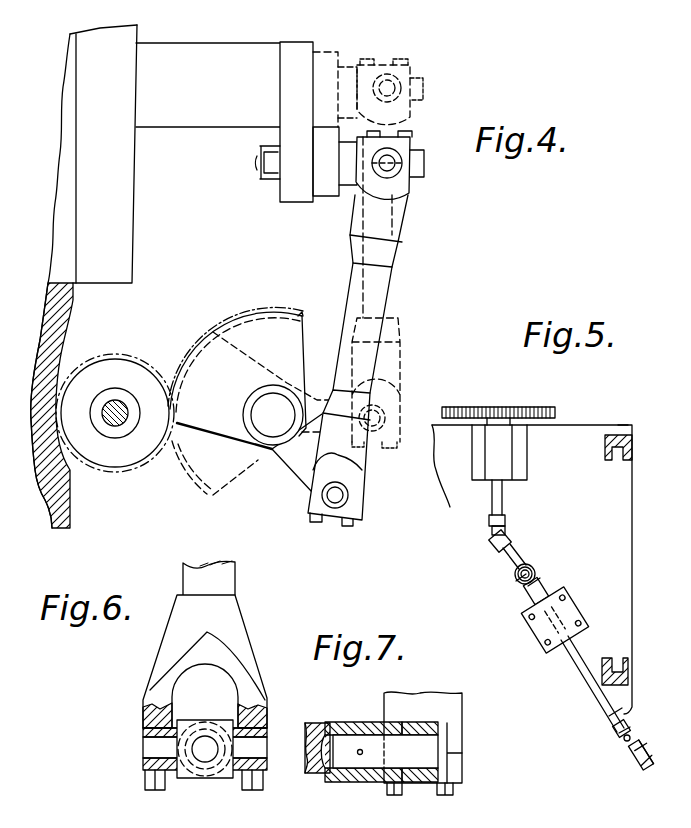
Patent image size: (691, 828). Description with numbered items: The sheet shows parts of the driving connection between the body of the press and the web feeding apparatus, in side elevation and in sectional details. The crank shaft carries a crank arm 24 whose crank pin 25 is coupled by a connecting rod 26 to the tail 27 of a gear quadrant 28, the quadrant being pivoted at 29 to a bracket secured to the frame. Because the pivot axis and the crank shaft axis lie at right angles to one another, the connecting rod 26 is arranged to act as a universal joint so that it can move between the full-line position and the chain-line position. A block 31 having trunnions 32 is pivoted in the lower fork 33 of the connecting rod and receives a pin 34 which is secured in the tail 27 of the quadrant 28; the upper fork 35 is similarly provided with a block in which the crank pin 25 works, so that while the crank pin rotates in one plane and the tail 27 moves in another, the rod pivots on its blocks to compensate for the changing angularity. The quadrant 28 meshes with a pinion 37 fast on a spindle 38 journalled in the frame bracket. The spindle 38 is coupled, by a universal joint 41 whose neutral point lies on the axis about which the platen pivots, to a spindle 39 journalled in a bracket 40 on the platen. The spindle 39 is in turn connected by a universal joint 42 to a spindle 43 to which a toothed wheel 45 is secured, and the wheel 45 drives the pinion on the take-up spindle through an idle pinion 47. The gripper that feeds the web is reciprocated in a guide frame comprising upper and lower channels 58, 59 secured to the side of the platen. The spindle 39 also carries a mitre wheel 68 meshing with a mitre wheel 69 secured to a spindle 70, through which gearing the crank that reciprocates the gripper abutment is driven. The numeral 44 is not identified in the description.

In FIG. 4, the crank arm 24 is at (283, 193).
In FIG. 4, the crank pin 25 is at (347, 180).
In FIG. 4, the connecting rod 26 is at (380, 303).
In FIG. 6, the connecting rod 26 is at (193, 567).
In FIG. 4, the tail 27 is at (305, 468).
In FIG. 7, the tail 27 is at (325, 722).
In FIG. 4, the gear quadrant 28 is at (243, 315).
In FIG. 4, the pivot 29 is at (272, 431).
In FIG. 6, the block 31 is at (185, 773).
In FIG. 7, the block 31 is at (415, 722).
In FIG. 4, the trunnions 32 is at (335, 503).
In FIG. 6, the trunnions 32 is at (148, 742).
In FIG. 4, the lower fork 33 is at (362, 460).
In FIG. 6, the lower fork 33 is at (145, 720).
In FIG. 7, the lower fork 33 is at (453, 710).
In FIG. 6, the pin 34 is at (207, 762).
In FIG. 7, the pin 34 is at (367, 757).
In FIG. 4, the upper fork 35 is at (410, 212).
In FIG. 4, the pinion 37 is at (156, 460).
In FIG. 4, the spindle 38 is at (112, 426).
In FIG. 5, the spindle 39 is at (578, 663).
In FIG. 5, the bracket 40 is at (535, 630).
In FIG. 5, the universal joint 41 is at (623, 747).
In FIG. 5, the universal joint 42 is at (492, 535).
In FIG. 5, the spindle 43 is at (505, 500).
In FIG. 5, the rod portion 44 is at (613, 692).
In FIG. 5, the toothed wheel 45 is at (552, 406).
In FIG. 5, the idle pinion 47 is at (623, 425).
In FIG. 5, the upper channel 58 is at (627, 458).
In FIG. 5, the lower channel 59 is at (623, 657).
In FIG. 5, the mitre wheel 68 is at (541, 583).
In FIG. 5, the mitre wheel 69 is at (515, 573).
In FIG. 5, the spindle 70 is at (520, 582).